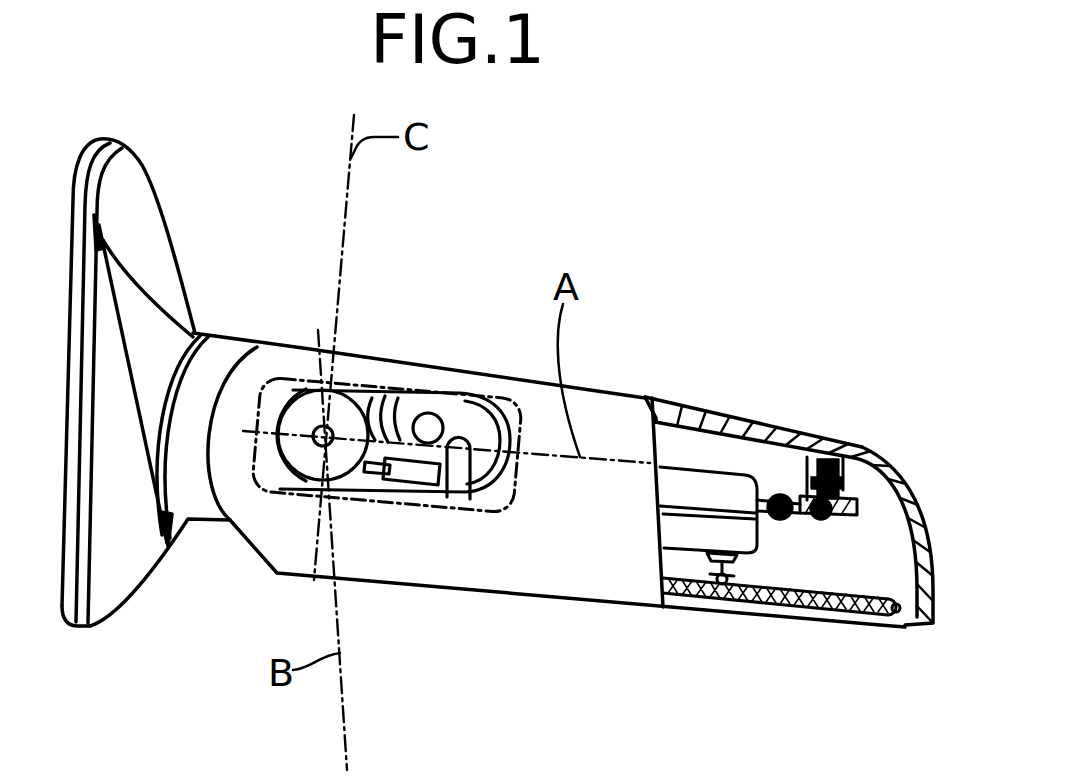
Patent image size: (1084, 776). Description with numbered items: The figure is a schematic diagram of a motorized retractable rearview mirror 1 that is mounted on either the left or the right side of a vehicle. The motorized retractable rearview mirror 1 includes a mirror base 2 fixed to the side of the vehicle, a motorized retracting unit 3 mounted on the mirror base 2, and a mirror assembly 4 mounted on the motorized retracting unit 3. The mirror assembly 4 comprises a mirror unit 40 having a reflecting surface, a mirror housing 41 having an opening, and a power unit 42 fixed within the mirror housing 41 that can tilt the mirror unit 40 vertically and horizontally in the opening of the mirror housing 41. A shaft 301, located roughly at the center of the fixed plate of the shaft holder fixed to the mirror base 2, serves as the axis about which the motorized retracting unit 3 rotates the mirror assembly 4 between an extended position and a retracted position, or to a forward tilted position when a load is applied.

The motorized retractable rearview mirror 1 is at (415, 353).
The mirror base 2 is at (162, 203).
The motorized retracting unit 3 is at (420, 530).
The mirror assembly 4 is at (707, 409).
The mirror unit 40 is at (880, 626).
The mirror housing 41 is at (887, 465).
The power unit 42 is at (730, 490).
The shaft 301 is at (325, 444).